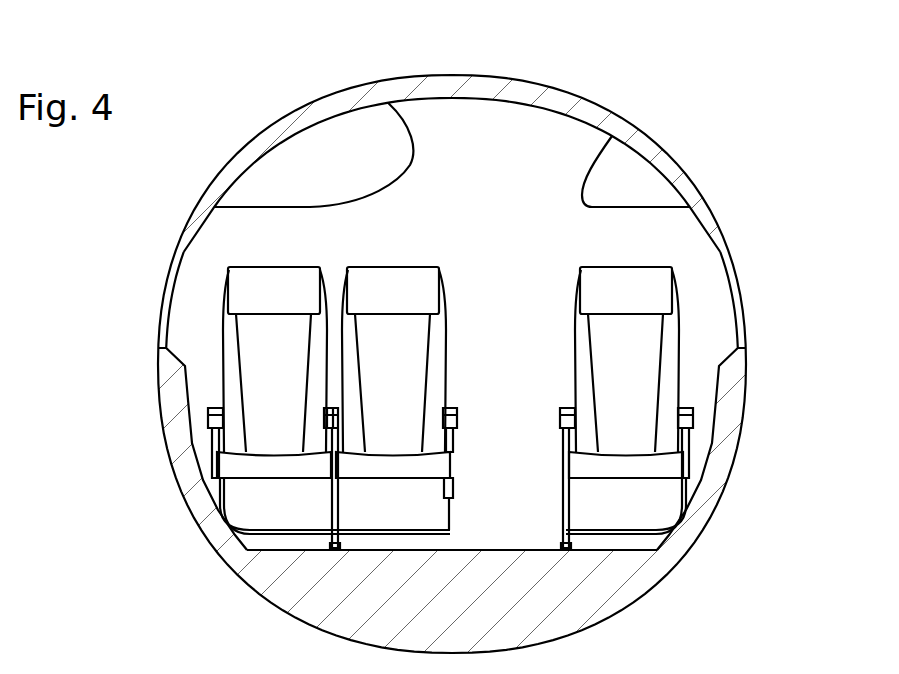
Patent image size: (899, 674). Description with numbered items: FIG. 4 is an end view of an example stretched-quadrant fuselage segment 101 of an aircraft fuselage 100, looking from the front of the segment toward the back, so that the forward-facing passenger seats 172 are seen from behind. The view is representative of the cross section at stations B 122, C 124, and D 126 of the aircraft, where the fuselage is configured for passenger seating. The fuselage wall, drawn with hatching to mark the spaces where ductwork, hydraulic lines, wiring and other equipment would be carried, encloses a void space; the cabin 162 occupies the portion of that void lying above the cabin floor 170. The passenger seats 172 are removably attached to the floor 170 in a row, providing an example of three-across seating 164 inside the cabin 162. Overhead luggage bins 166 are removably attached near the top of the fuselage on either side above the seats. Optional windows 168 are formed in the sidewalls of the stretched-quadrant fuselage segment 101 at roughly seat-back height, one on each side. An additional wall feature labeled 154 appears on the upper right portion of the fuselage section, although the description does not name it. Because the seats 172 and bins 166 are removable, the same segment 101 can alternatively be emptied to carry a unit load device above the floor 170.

The aircraft fuselage 100 is at (312, 48).
The stretched-quadrant fuselage segment 101 is at (232, 92).
The station B 122 is at (623, 72).
The station C 124 is at (747, 72).
The station D 126 is at (712, 139).
The fuselage crown / skin 154 is at (695, 200).
The cabin 162 is at (486, 259).
The three-across seating 164 is at (522, 228).
The overhead luggage bins 166 is at (405, 128).
The windows 168 is at (116, 288).
The cabin floor 170 is at (472, 550).
The passenger seats 172 is at (277, 266).